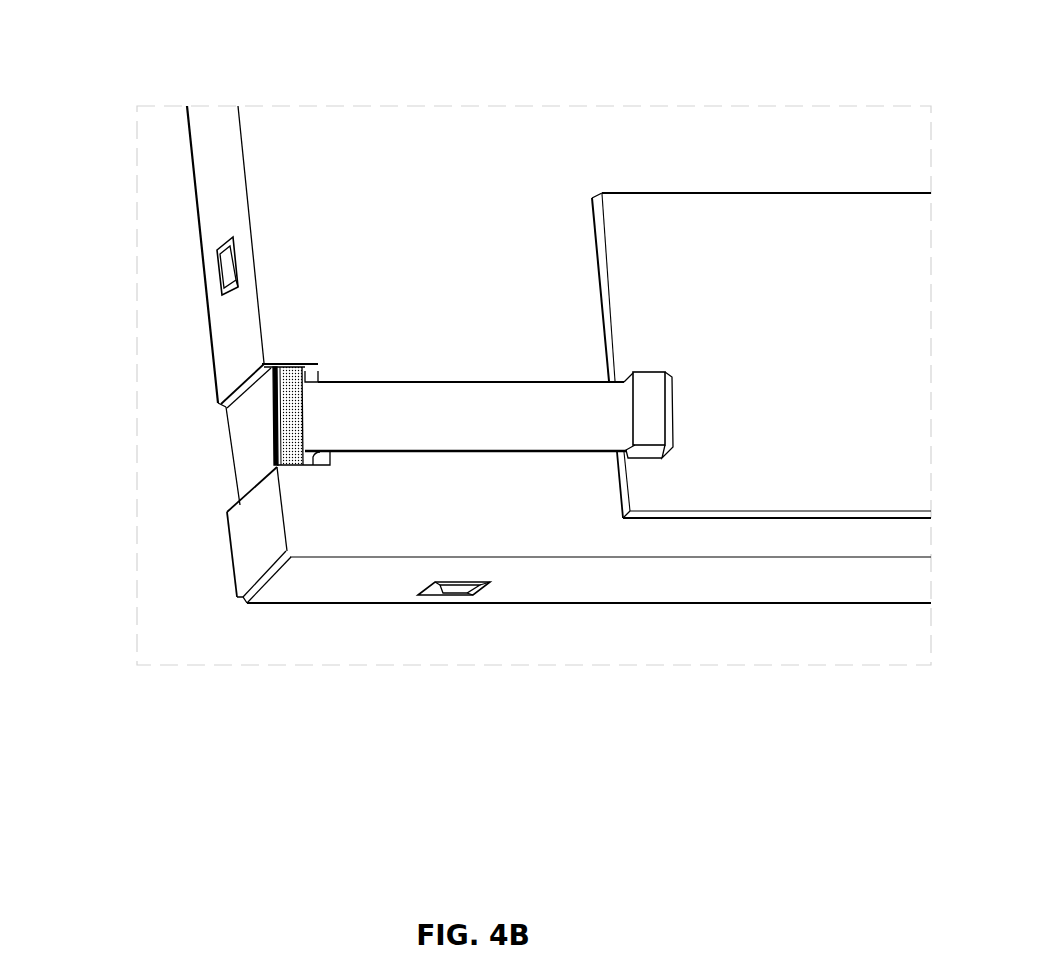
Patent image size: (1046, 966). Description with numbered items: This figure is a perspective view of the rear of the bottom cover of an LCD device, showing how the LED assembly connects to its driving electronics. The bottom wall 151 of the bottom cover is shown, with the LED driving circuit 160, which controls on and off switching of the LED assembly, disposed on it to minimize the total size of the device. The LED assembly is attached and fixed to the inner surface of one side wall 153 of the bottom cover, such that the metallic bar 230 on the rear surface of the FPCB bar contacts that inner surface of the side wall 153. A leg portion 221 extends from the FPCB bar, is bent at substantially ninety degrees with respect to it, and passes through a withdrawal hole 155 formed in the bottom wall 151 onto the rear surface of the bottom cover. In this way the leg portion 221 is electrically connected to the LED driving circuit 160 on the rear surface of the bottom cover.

The bottom wall 151 is at (322, 160).
The side wall 153 is at (213, 175).
The withdrawal hole 155 is at (321, 369).
The LED driving circuit 160 is at (730, 227).
The leg portion 221 is at (460, 428).
The metallic bar 230 is at (292, 468).